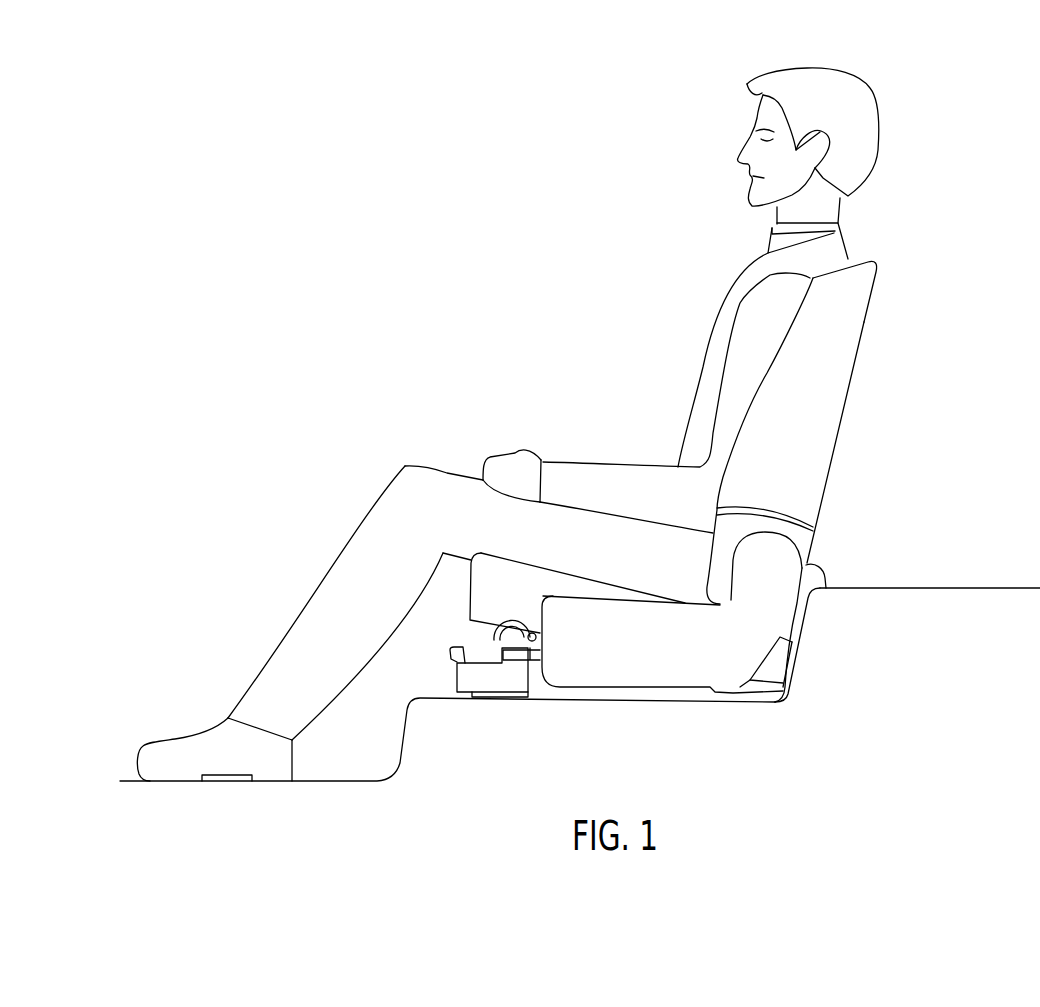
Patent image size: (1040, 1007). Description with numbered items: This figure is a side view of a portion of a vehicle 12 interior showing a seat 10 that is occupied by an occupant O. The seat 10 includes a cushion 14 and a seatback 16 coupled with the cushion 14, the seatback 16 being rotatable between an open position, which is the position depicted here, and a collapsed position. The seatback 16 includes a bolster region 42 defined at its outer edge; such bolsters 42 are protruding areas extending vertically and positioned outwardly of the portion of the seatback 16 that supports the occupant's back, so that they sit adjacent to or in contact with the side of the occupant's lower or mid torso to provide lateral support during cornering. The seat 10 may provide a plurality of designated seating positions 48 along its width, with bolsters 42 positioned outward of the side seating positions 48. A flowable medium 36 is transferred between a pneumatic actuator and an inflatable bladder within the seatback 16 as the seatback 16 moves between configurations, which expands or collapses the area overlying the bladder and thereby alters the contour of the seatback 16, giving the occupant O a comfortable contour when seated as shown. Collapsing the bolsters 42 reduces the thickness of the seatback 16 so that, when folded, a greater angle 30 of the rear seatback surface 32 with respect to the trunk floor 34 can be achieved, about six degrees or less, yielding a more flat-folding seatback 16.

The occupant O is at (675, 105).
The seat 10 is at (679, 451).
The vehicle 12 is at (479, 757).
The cushion 14 is at (460, 611).
The seatback 16 is at (820, 456).
The angle 30 is at (824, 577).
The rear seatback surface 32 is at (820, 504).
The trunk floor 34 is at (957, 586).
The flowable medium 36 is at (1011, 484).
The bolster region 42 is at (740, 450).
The seating position 48 is at (856, 256).